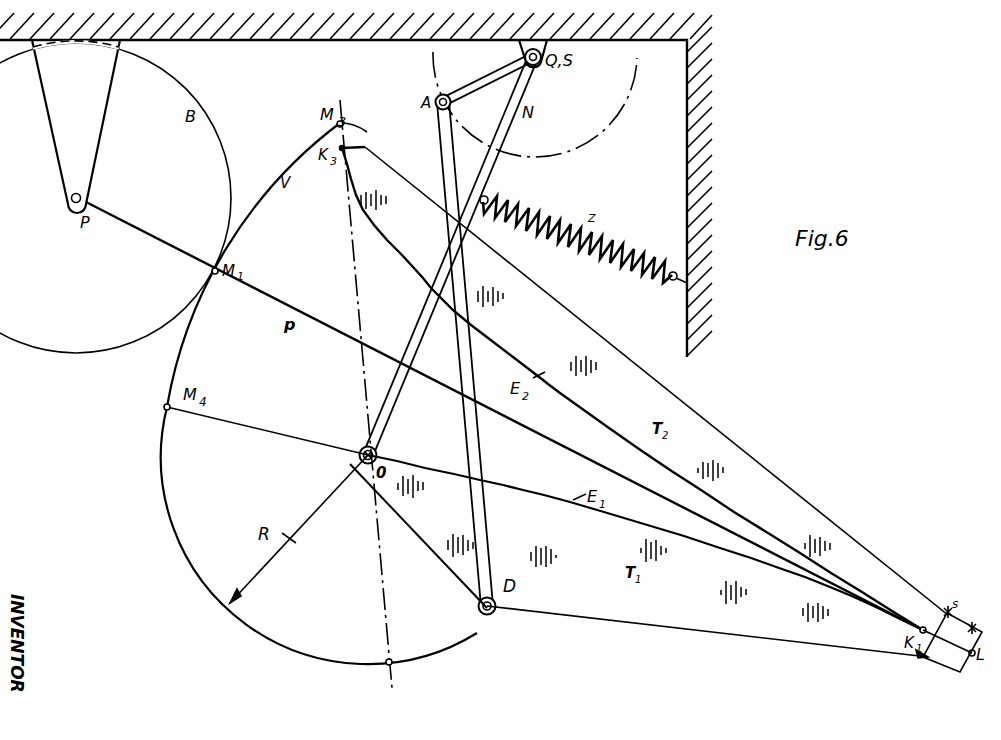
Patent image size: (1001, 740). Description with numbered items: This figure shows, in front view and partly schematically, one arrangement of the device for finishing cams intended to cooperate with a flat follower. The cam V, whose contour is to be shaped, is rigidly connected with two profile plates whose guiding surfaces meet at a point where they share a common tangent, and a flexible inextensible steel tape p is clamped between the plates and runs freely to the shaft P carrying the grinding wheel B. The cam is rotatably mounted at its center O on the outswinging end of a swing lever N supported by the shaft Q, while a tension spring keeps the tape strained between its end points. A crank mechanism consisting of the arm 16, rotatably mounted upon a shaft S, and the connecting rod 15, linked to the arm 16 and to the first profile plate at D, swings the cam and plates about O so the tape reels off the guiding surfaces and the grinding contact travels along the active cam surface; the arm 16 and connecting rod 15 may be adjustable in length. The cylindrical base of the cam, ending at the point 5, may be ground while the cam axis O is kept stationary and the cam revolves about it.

The connecting rod 15 is at (478, 462).
The arm 16 is at (490, 82).
The end point of cylindrical base 5 is at (392, 665).